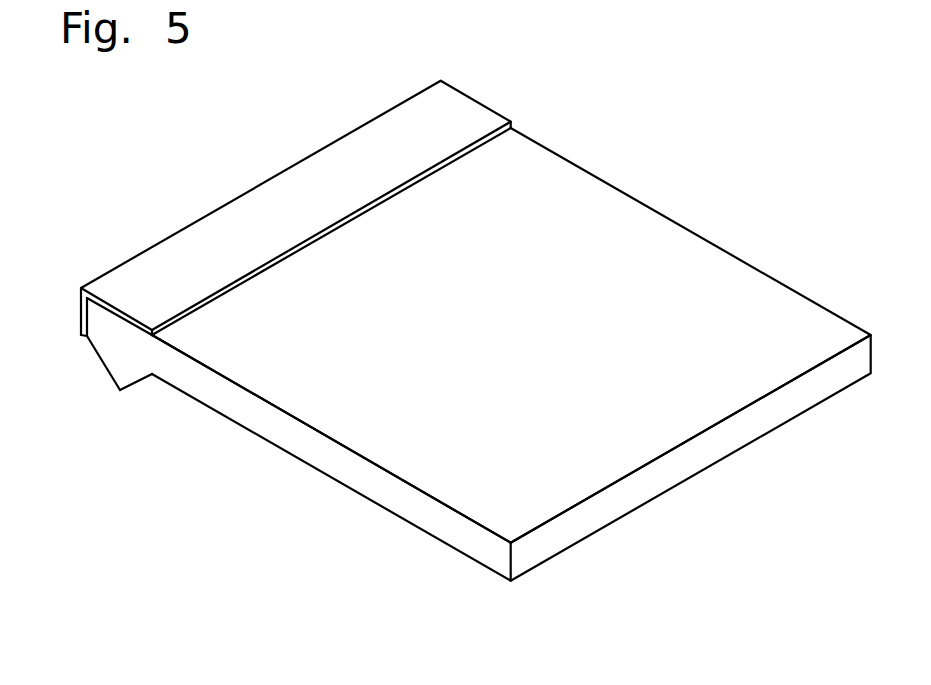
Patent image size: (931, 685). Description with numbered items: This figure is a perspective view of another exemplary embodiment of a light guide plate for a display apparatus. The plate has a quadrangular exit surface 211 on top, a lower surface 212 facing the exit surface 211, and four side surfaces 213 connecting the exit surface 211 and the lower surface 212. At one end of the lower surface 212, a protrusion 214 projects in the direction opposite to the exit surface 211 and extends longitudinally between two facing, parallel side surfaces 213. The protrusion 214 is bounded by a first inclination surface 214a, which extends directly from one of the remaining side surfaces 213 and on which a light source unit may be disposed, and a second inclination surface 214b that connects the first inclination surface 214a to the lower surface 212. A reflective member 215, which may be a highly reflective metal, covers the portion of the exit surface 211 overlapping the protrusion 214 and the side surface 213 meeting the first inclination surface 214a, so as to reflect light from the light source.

The exit surface 211 is at (700, 258).
The lower surface 212 is at (382, 505).
The side surface 213 is at (648, 485).
The protrusion 214 is at (110, 417).
The first inclination surface 214a is at (105, 368).
The second inclination surface 214b is at (145, 416).
The reflective member 215 is at (470, 112).